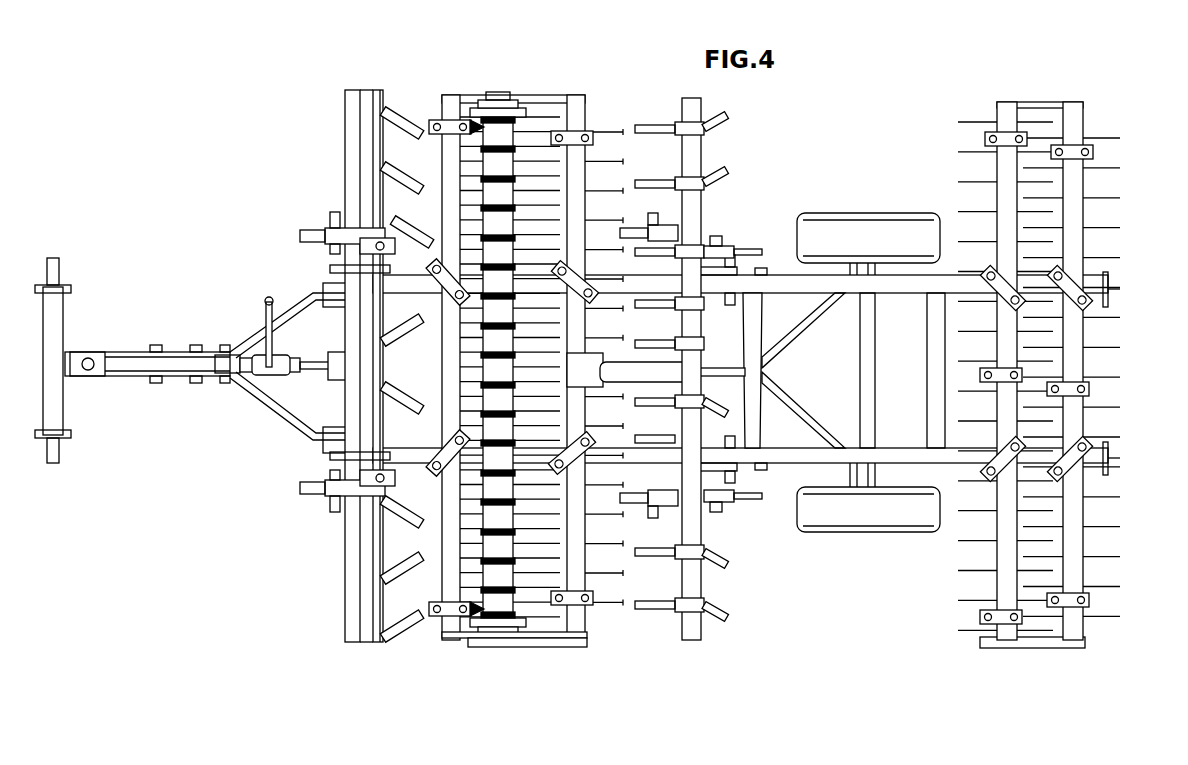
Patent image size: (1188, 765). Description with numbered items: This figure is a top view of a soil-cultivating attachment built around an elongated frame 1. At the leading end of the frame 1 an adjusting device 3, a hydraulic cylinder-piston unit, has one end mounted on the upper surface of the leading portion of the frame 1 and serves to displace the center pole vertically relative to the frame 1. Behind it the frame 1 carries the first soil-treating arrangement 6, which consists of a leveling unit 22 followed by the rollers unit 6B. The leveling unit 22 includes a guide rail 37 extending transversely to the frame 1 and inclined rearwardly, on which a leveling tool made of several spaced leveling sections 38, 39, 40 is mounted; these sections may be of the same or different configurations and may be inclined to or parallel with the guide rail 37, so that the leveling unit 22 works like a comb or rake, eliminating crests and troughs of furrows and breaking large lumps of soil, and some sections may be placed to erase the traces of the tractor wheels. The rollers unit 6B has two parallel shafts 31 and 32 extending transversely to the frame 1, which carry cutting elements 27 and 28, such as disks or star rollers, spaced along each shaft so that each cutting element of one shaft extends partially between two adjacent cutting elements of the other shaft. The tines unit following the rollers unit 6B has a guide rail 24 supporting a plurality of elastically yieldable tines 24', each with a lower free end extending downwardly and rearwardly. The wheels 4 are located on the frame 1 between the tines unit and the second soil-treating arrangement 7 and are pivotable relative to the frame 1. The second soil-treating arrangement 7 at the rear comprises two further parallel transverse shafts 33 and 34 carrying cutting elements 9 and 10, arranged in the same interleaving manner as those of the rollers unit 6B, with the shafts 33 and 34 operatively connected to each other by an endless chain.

The frame 1 is at (746, 348).
The adjusting device 3 is at (191, 360).
The wheels 4 is at (853, 226).
The first soil-treating arrangement 6 is at (580, 412).
The rollers unit 6B is at (514, 662).
The second soil-treating arrangement 7 is at (1038, 398).
The cutting elements 9 is at (997, 200).
The cutting elements 10 is at (1129, 188).
The leveling unit 22 is at (358, 381).
The guide rail 24 is at (694, 385).
The elastically yieldable tines 24' is at (735, 367).
The cutting elements 27 is at (465, 367).
The cutting elements 28 is at (623, 371).
The shaft 31 is at (497, 227).
The shaft 32 is at (586, 210).
The shaft 33 is at (985, 371).
The shaft 34 is at (1091, 371).
The guide rail 37 is at (366, 619).
The leveling section 38 is at (406, 372).
The leveling section 39 is at (412, 404).
The leveling section 40 is at (393, 630).